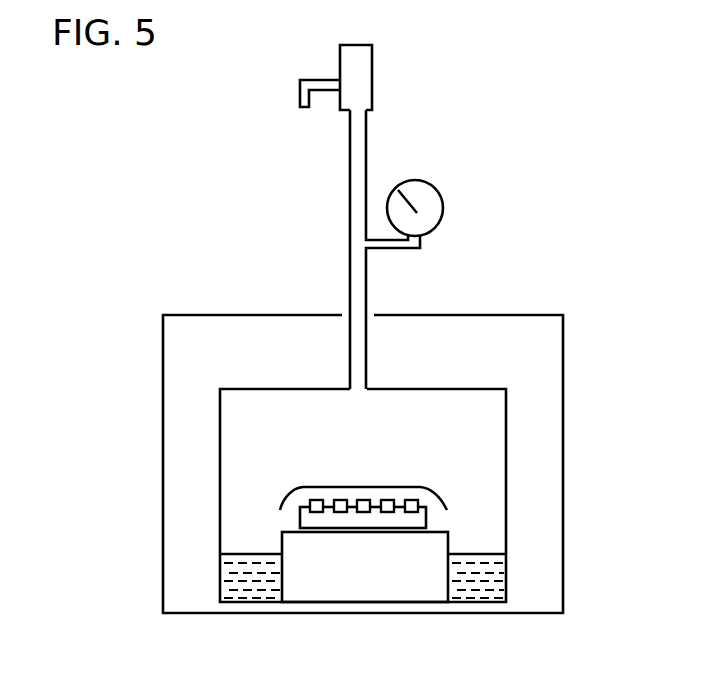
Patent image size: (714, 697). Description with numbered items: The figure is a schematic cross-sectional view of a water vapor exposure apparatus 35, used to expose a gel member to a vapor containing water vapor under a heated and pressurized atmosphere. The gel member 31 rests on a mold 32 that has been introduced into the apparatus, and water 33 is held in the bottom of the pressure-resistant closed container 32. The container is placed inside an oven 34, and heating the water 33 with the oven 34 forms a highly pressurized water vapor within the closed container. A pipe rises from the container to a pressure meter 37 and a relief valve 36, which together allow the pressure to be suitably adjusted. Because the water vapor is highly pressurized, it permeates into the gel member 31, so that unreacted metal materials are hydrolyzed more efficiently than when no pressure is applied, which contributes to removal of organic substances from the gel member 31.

The gel member 31 is at (418, 507).
The mold / pressure-resistant closed container 32 is at (506, 428).
The water 33 is at (507, 575).
The oven 34 is at (563, 343).
The water vapor exposure apparatus 35 is at (378, 668).
The relief valve 36 is at (365, 75).
The pressure meter 37 is at (438, 208).